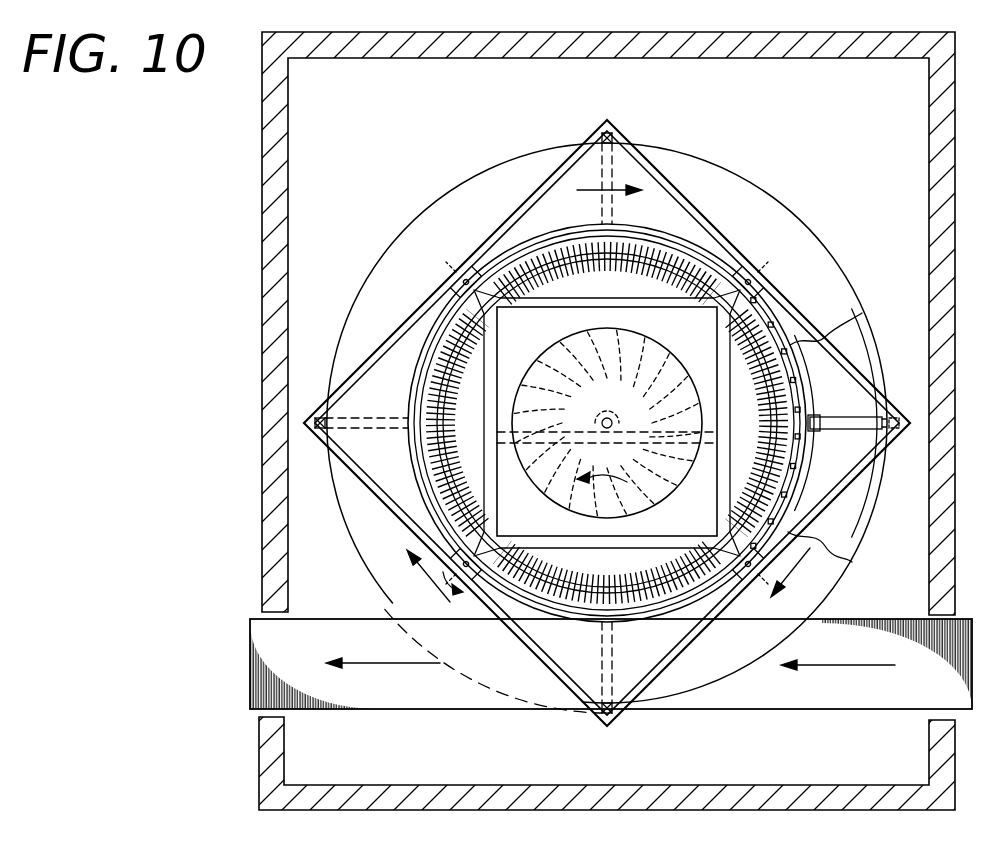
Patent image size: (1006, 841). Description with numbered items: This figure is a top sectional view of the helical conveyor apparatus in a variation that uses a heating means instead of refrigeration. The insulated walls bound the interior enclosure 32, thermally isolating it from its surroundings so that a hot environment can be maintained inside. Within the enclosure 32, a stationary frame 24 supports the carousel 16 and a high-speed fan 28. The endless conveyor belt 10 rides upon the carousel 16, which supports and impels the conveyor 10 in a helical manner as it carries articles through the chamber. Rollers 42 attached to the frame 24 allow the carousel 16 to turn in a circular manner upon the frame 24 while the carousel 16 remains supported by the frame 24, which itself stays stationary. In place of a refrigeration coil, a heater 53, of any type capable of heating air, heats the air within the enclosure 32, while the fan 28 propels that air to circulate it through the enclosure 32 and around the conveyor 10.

The endless conveyor belt 10 is at (866, 709).
The carousel 16 is at (605, 120).
The frame 24 is at (568, 232).
The high-speed fan 28 is at (645, 343).
The interior enclosure 32 is at (262, 190).
The rollers 42 is at (460, 272).
The heater 53 is at (590, 265).